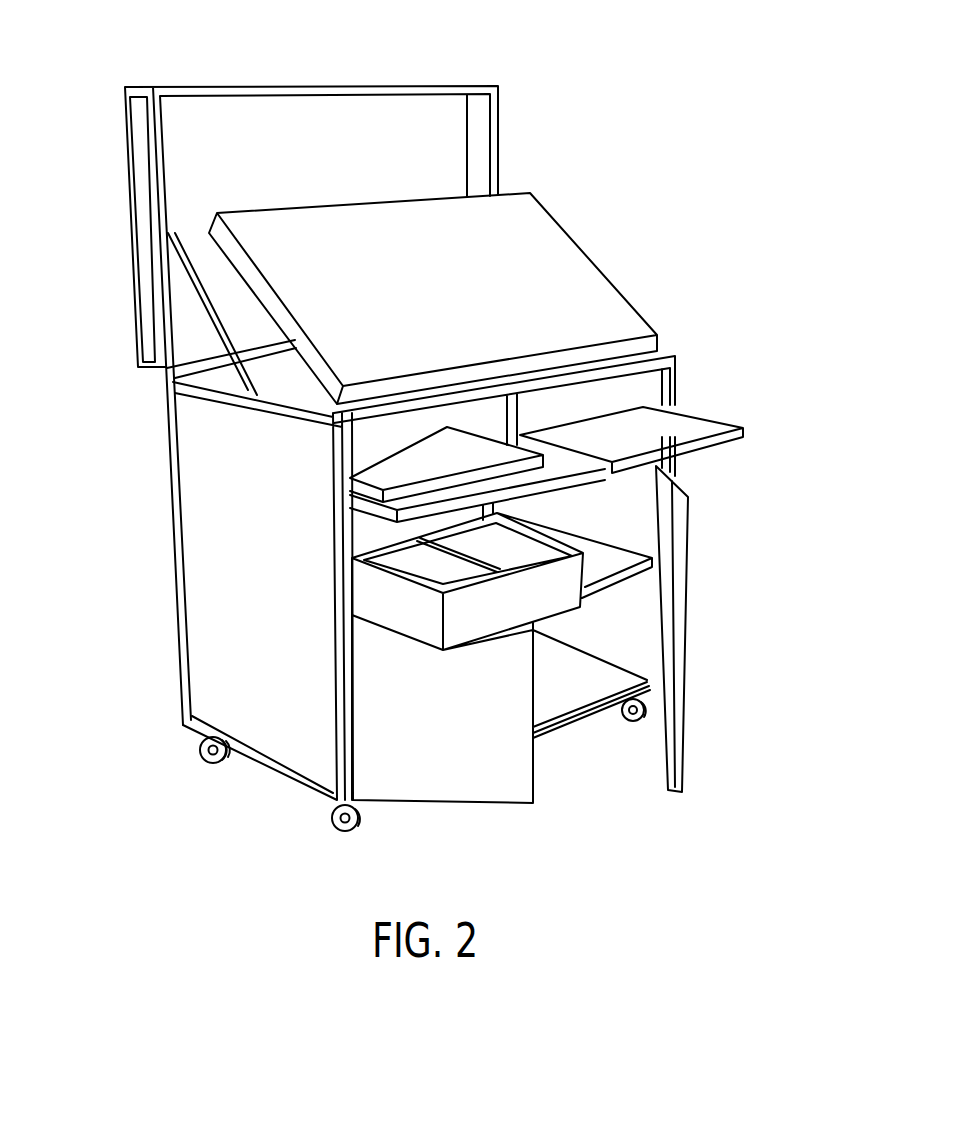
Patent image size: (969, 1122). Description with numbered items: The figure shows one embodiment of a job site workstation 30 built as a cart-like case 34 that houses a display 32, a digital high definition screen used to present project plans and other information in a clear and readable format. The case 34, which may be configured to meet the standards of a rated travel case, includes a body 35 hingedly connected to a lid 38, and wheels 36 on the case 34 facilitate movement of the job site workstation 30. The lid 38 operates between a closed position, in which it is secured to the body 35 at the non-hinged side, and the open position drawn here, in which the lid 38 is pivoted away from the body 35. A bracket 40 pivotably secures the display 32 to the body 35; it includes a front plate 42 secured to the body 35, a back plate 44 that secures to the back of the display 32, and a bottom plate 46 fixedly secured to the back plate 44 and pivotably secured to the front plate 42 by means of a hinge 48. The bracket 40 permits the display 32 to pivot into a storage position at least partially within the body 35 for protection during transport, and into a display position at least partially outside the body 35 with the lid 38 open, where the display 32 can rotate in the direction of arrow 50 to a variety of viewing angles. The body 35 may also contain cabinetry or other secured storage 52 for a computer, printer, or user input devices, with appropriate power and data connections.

The job site workstation 30 is at (694, 128).
The display 32 is at (582, 289).
The case 34 is at (140, 457).
The body 35 is at (213, 583).
The wheels 36 is at (335, 826).
The lid 38 is at (316, 86).
The bracket 40 is at (226, 280).
The front plate 42 is at (630, 357).
The back plate 44 is at (267, 318).
The bottom plate 46 is at (352, 398).
The hinge 48 is at (660, 336).
The arrow 50 is at (577, 218).
The secured storage 52 is at (707, 528).